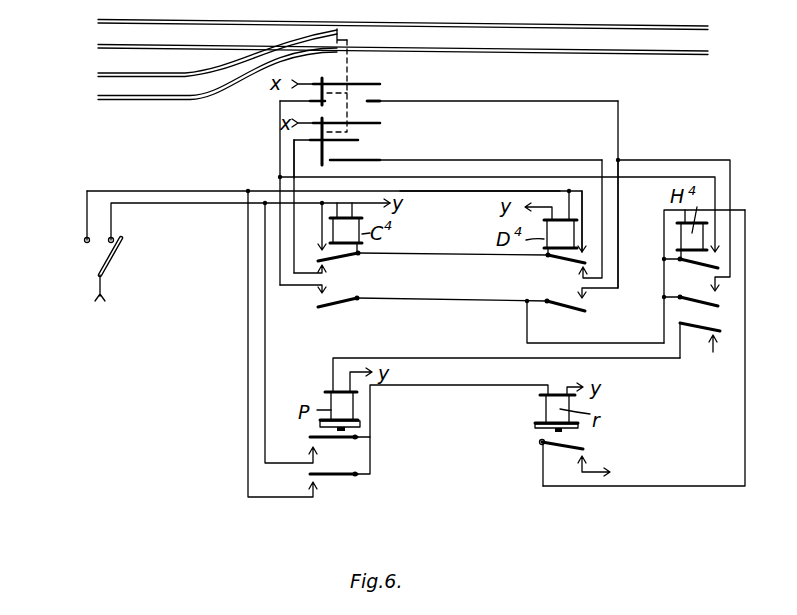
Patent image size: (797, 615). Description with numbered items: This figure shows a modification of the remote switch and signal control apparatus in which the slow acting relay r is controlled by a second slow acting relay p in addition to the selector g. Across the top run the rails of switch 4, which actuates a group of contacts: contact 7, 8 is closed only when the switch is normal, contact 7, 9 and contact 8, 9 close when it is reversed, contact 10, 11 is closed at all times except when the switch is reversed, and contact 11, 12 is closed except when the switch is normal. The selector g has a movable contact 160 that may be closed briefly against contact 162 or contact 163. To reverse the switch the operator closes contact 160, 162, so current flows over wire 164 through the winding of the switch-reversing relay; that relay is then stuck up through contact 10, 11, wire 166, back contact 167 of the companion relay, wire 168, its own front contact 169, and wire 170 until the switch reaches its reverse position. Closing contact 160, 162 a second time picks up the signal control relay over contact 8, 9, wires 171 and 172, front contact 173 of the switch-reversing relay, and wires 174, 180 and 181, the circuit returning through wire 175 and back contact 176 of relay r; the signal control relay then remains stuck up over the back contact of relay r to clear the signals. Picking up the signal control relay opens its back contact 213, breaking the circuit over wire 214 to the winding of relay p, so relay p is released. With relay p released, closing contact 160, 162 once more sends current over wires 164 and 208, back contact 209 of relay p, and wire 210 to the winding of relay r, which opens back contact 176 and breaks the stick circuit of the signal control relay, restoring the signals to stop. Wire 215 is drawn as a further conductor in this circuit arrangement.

The switch 4 is at (403, 66).
The switch contact 7 is at (327, 102).
The switch contact 8 is at (389, 76).
The switch contact 9 is at (381, 102).
The switch contact 10 is at (380, 123).
The switch contact 11 is at (318, 143).
The switch contact 12 is at (380, 160).
The selector contact 160 is at (112, 262).
The selector contact 162 is at (84, 240).
The selector contact 163 is at (113, 239).
The wire 164 is at (160, 178).
The wire 166 is at (294, 150).
The back contact of relay C4 167 is at (334, 259).
The wire 168 is at (461, 256).
The front contact of relay D4 169 is at (569, 265).
The wire 170 is at (583, 205).
The wire 171 is at (618, 128).
The wire 172 is at (618, 226).
The front contact of relay D4 173 is at (559, 318).
The wire 174 is at (617, 343).
The wire 175 is at (745, 397).
The back contact of relay r 176 is at (582, 449).
The wire 180 is at (664, 297).
The wire 181 is at (664, 247).
The wire 208 is at (248, 375).
The back contact of relay p 209 is at (333, 478).
The wire 210 is at (472, 388).
The back contact of relay H4 213 is at (716, 324).
The wire 214 is at (467, 358).
The wire 215 is at (459, 193).